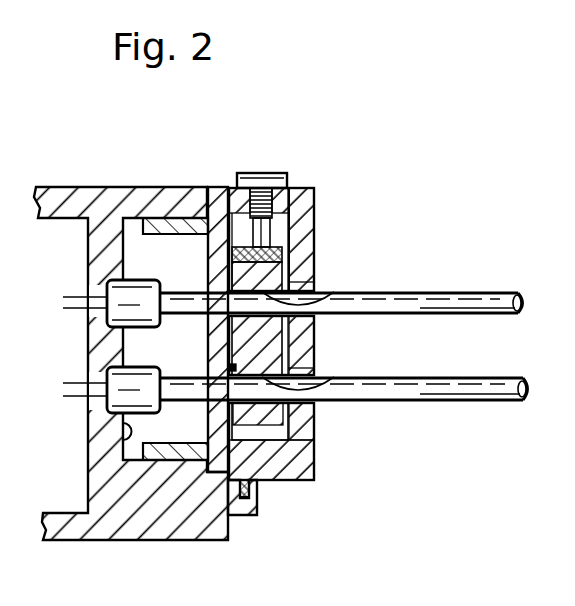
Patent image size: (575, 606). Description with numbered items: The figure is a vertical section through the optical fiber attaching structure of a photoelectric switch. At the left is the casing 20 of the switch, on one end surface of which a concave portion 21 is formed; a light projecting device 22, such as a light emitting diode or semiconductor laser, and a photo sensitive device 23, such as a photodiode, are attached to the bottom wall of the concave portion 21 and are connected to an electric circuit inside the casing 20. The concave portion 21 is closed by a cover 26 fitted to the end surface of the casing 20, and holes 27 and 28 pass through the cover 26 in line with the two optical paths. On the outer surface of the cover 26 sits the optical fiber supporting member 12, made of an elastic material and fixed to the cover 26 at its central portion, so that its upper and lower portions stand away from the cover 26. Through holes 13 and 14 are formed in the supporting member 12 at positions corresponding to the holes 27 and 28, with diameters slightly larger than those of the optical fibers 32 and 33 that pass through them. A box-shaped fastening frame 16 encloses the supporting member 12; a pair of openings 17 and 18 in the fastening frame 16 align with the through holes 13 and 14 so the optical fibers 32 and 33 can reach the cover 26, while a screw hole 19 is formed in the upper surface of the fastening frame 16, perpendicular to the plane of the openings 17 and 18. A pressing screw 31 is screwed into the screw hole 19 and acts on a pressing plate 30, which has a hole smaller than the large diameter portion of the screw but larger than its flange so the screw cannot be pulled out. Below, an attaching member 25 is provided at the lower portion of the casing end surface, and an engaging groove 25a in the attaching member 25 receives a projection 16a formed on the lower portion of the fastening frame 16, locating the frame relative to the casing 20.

The optical fiber supporting member 12 is at (357, 454).
The through hole 13 is at (347, 293).
The through hole 14 is at (343, 375).
The fastening frame 16 is at (311, 193).
The projection 16a is at (252, 487).
The opening 17 is at (323, 288).
The opening 18 is at (323, 376).
The screw hole 19 is at (237, 186).
The casing 20 is at (130, 527).
The concave portion 21 is at (120, 447).
The light projecting device 22 is at (122, 288).
The photo sensitive device 23 is at (122, 377).
The attaching member 25 is at (250, 517).
The engaging groove 25a is at (257, 506).
The cover 26 is at (217, 186).
The hole 27 is at (200, 286).
The hole 28 is at (197, 405).
The pressing plate 30 is at (290, 237).
The pressing screw 31 is at (268, 173).
The optical fiber 32 is at (498, 292).
The optical fiber 33 is at (497, 378).